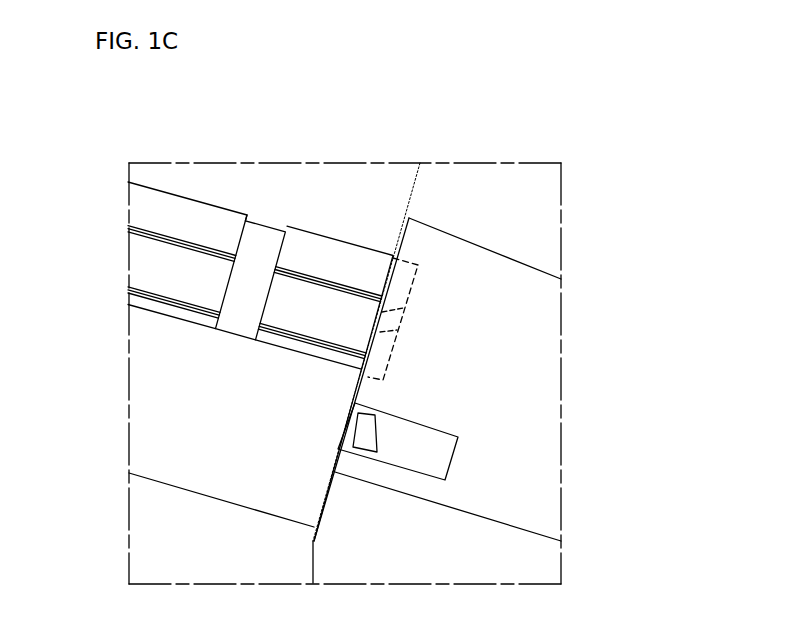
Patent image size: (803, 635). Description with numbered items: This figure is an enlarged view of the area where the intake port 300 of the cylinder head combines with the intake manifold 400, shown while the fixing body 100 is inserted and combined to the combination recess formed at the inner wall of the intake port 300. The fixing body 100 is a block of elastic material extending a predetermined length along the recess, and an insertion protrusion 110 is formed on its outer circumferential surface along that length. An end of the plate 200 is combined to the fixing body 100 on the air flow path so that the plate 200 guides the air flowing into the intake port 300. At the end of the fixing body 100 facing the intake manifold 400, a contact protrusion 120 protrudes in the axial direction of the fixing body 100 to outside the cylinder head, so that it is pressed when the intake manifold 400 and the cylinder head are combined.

The fixing body 100 is at (208, 236).
The insertion protrusion 110 is at (153, 240).
The contact protrusion 120 is at (390, 292).
The plate 200 is at (353, 183).
The intake port 300 is at (170, 418).
The intake manifold 400 is at (513, 398).